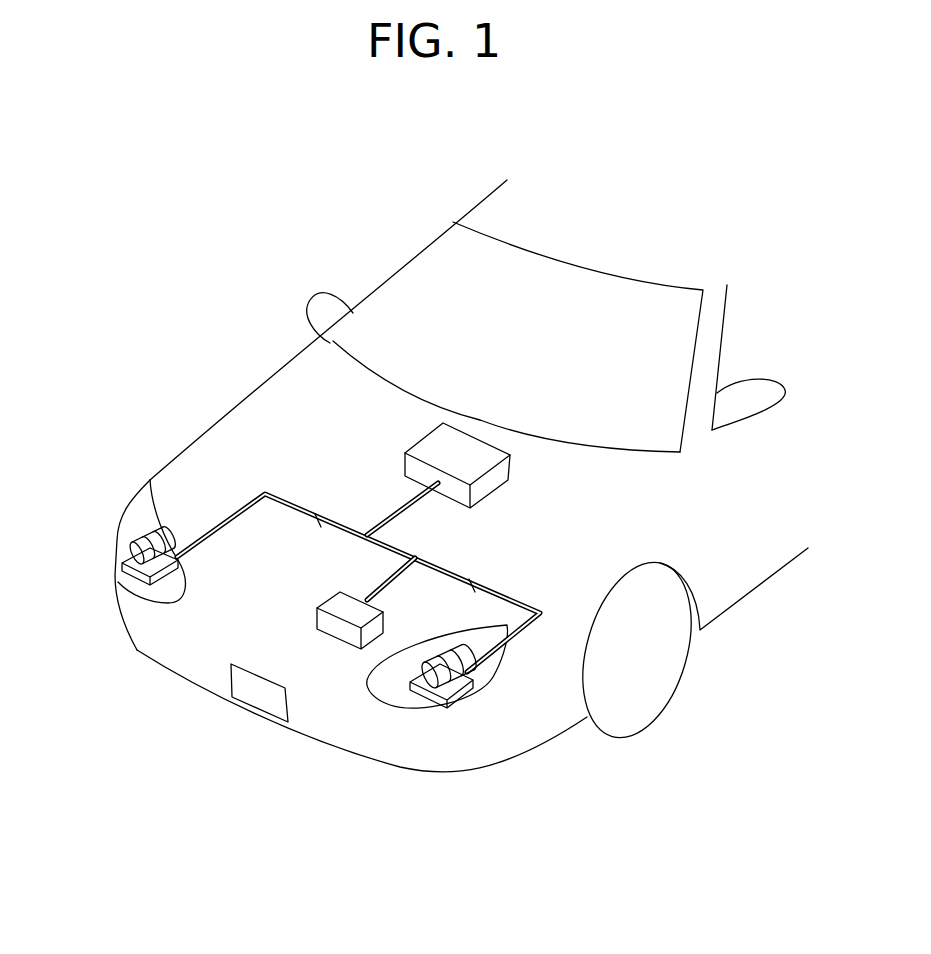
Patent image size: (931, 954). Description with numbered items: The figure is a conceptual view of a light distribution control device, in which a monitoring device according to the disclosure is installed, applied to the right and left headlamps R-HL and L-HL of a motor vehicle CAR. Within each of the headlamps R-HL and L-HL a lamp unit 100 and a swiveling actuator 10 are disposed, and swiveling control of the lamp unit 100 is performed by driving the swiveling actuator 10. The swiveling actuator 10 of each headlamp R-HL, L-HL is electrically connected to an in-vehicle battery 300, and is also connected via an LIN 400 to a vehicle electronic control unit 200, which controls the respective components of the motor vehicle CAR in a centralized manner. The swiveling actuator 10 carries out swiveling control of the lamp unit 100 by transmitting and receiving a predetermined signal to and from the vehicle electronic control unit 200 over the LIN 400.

The lamp unit 100 is at (133, 545).
The swiveling actuator 10 is at (137, 577).
The vehicle electronic control unit 200 is at (425, 435).
The in-vehicle battery 300 is at (337, 605).
The LIN 400 is at (443, 567).
The motor vehicle CAR is at (378, 285).
The right headlamp R-HL is at (128, 502).
The left headlamp L-HL is at (500, 678).